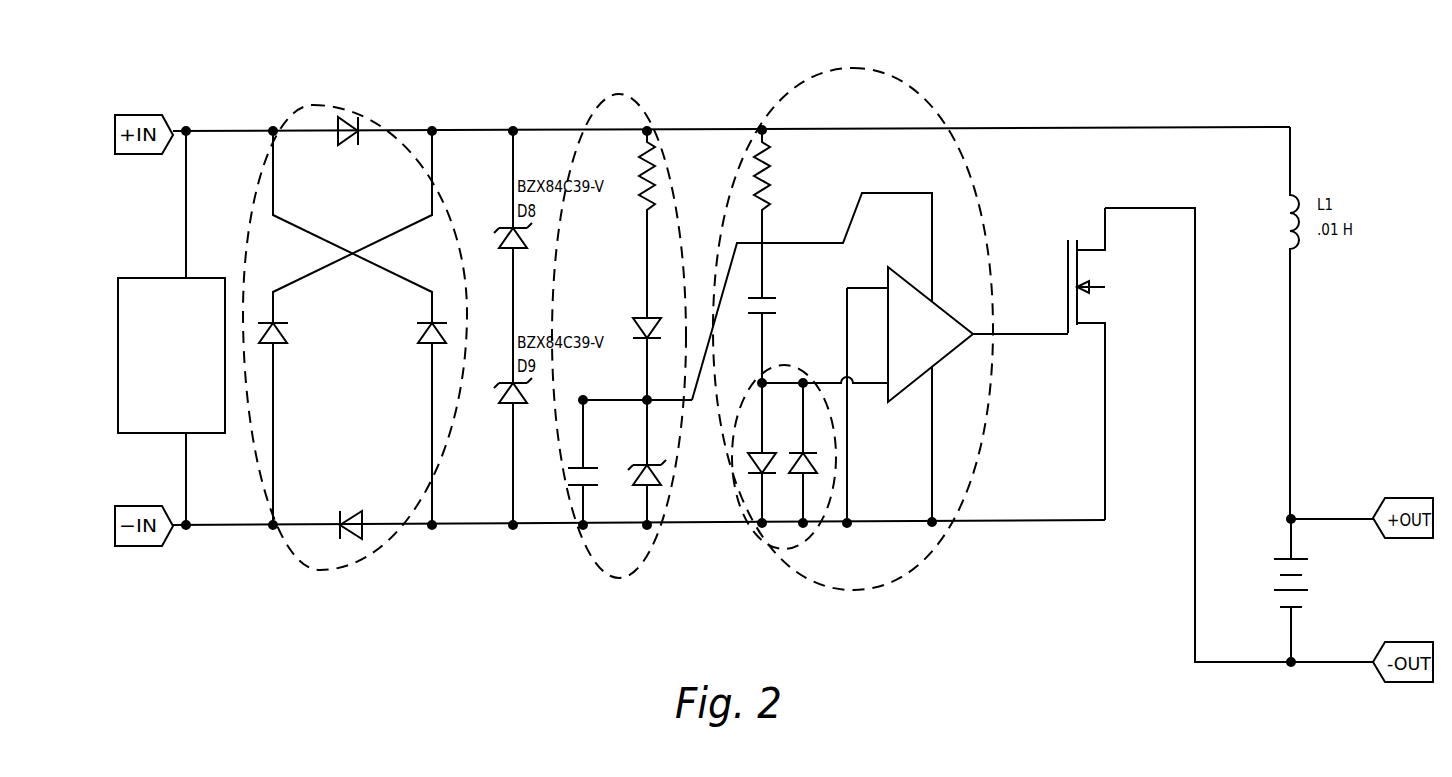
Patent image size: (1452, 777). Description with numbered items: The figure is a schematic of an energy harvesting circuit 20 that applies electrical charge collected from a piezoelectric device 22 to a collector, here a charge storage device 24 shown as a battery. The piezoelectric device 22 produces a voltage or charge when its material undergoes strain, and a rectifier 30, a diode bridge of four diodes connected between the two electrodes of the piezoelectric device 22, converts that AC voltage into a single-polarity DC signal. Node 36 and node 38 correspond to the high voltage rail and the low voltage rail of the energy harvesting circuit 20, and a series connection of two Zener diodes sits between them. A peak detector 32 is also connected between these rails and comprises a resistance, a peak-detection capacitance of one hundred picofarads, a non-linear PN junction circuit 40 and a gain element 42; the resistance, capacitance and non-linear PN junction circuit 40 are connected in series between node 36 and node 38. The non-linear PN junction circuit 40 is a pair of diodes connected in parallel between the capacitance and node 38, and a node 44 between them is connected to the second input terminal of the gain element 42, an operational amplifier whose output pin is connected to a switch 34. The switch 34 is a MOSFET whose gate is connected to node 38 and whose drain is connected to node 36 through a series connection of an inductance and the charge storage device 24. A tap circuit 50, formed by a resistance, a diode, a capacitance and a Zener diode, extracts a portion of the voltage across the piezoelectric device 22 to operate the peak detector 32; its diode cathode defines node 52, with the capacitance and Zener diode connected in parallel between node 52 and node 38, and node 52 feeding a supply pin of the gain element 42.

The energy harvesting circuit 20 is at (963, 90).
The piezoelectric device 22 is at (163, 278).
The charge storage device 24 is at (1320, 585).
The rectifier 30 is at (308, 568).
The peak detector 32 is at (882, 590).
The switch 34 is at (1084, 226).
The node 36 is at (433, 130).
The node 38 is at (435, 527).
The non-linear PN junction circuit 40 is at (787, 547).
The gain element 42 is at (915, 383).
The node 44 is at (760, 382).
The tap circuit 50 is at (587, 577).
The node 52 is at (647, 398).